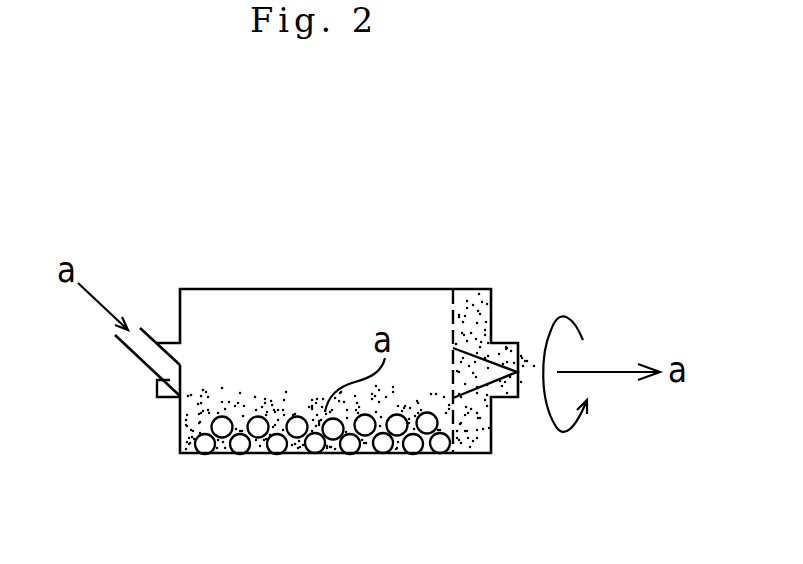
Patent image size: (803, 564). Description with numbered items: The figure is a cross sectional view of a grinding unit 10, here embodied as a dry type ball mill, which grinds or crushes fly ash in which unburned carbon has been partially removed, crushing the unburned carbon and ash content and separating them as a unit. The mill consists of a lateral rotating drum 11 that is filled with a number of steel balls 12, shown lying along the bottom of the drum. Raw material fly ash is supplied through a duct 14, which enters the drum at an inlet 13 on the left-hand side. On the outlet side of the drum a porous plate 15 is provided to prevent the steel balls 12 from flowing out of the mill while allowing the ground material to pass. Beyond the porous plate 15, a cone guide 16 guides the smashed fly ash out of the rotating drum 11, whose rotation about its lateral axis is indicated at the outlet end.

The grinding unit 10 is at (332, 286).
The lateral rotating drum 11 is at (218, 289).
The steel balls 12 is at (284, 458).
The inlet 13 is at (166, 398).
The duct 14 is at (134, 352).
The porous plate 15 is at (454, 318).
The cone guide 16 is at (470, 396).